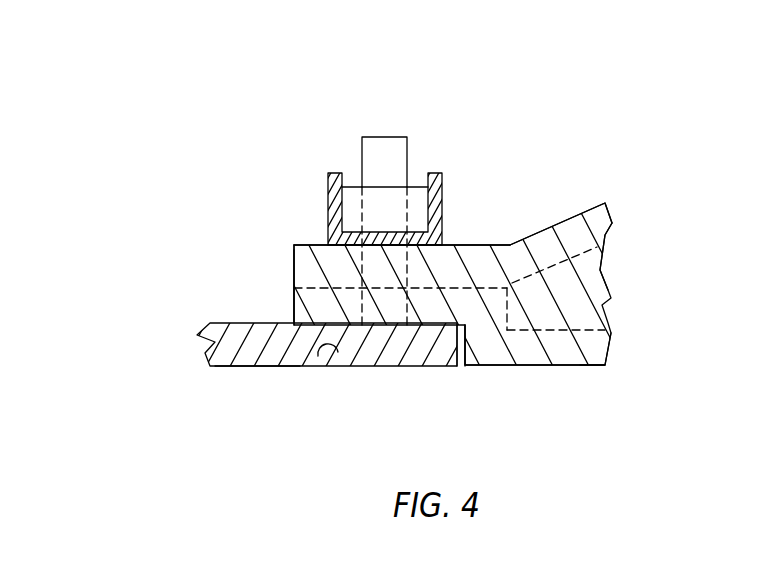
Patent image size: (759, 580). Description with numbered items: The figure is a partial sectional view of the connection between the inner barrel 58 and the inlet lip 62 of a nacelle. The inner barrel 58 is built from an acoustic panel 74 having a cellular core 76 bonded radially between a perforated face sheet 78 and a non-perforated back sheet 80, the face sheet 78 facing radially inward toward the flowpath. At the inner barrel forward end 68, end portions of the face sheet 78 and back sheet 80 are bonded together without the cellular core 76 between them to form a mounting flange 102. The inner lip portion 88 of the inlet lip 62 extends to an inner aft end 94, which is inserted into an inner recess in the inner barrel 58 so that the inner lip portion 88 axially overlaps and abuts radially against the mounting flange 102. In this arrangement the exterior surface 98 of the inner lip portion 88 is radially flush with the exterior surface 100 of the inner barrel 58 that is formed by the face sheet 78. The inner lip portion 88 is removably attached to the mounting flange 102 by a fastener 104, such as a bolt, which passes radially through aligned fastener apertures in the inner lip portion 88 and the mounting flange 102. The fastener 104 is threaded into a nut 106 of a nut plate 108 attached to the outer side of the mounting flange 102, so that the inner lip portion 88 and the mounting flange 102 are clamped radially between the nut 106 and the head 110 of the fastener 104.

The inner barrel 58 is at (474, 276).
The acoustic panel 74 is at (624, 295).
The inlet lip 62 is at (302, 376).
The inner lip portion 88 is at (202, 381).
The inner barrel forward end 68 is at (293, 303).
The cellular core 76 is at (599, 262).
The perforated face sheet 78 is at (608, 346).
The non-perforated back sheet 80 is at (612, 223).
The inner aft end 94 is at (461, 367).
The exterior surface of inlet lip 98 is at (247, 367).
The exterior surface of inner barrel 100 is at (548, 367).
The mounting flange 102 is at (277, 258).
The fastener 104 is at (385, 133).
The nut 106 is at (417, 185).
The nut plate 108 is at (442, 192).
The head 110 is at (321, 367).